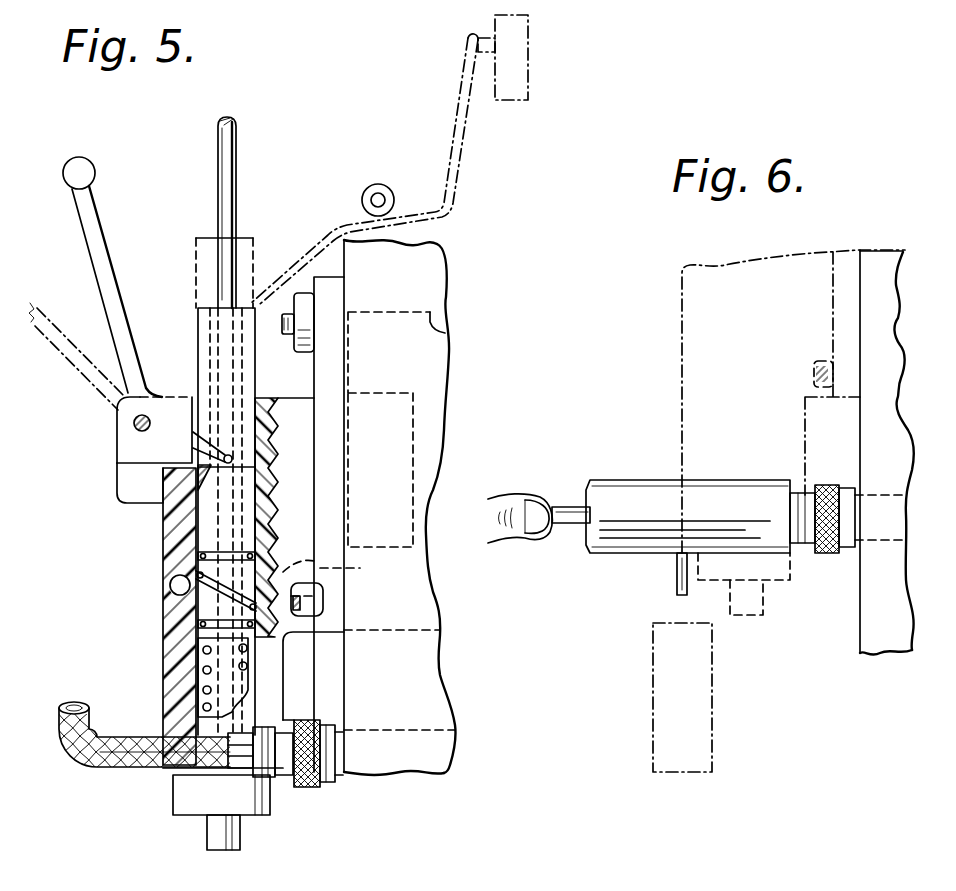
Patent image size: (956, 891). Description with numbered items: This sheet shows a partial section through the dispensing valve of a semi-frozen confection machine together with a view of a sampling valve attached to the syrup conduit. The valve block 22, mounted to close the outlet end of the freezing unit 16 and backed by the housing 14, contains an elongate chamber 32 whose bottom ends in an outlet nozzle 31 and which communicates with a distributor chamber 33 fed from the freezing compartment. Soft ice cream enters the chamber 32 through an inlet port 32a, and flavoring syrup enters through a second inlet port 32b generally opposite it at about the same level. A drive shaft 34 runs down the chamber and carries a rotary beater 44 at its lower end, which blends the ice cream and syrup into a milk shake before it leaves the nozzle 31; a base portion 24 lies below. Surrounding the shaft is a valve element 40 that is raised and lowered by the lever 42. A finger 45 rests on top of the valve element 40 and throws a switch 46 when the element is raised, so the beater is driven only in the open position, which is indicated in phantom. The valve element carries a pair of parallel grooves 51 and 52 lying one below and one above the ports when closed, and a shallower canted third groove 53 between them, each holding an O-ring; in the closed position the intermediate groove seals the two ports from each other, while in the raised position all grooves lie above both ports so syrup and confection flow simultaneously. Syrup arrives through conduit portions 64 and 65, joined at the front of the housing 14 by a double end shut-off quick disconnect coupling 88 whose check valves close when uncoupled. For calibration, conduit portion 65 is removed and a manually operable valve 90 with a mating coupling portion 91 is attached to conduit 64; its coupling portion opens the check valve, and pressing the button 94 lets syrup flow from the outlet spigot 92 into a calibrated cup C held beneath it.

In FIG. 5, the housing 14 is at (413, 668).
In FIG. 6, the housing 14 is at (860, 641).
In FIG. 5, the freezing unit 16 is at (457, 333).
In FIG. 5, the valve block 22 is at (146, 540).
In FIG. 6, the valve block 22 is at (682, 363).
In FIG. 5, the base 24 is at (357, 885).
In FIG. 5, the outlet nozzle 31 is at (213, 838).
In FIG. 5, the elongate chamber 32 is at (240, 494).
In FIG. 5, the inlet port 32a is at (320, 605).
In FIG. 5, the second inlet port 32b is at (171, 586).
In FIG. 5, the distributor chamber 33 is at (335, 573).
In FIG. 5, the drive shaft 34 is at (227, 182).
In FIG. 5, the valve element 40 is at (210, 334).
In FIG. 5, the lever 42 is at (94, 265).
In FIG. 5, the rotary beater 44 is at (248, 660).
In FIG. 5, the finger 45 is at (460, 182).
In FIG. 5, the switch 46 is at (484, 38).
In FIG. 5, the groove 51 is at (218, 625).
In FIG. 5, the groove 52 is at (243, 556).
In FIG. 5, the third groove 53 is at (230, 590).
In FIG. 5, the conduit portion 64 is at (403, 728).
In FIG. 6, the conduit portion 64 is at (883, 490).
In FIG. 5, the conduit portion 65 is at (120, 762).
In FIG. 5, the quick disconnect coupling 88 is at (305, 788).
In FIG. 6, the manually operable valve 90 is at (635, 456).
In FIG. 6, the coupling portion 91 is at (828, 553).
In FIG. 6, the outlet spigot 92 is at (677, 582).
In FIG. 6, the button 94 is at (568, 513).
In FIG. 6, the calibrated cup C is at (712, 687).